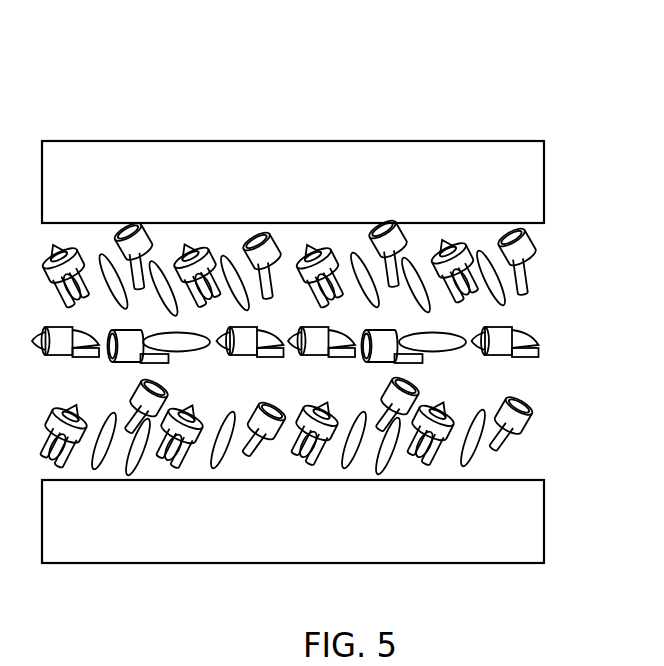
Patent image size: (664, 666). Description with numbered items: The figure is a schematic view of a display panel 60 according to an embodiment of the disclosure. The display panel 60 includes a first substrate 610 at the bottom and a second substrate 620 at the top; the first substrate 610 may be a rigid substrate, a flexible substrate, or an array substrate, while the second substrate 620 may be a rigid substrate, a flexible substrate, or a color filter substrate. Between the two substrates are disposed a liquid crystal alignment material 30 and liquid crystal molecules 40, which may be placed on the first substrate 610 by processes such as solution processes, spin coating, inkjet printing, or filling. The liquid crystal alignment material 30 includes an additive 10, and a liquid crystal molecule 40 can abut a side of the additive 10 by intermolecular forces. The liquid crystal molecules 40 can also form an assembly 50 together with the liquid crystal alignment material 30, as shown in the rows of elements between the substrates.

The display panel 60 is at (293, 80).
The second substrate 620 is at (520, 173).
The first substrate 610 is at (522, 528).
The liquid crystal alignment material 30 is at (520, 252).
The additive 10 is at (520, 282).
The liquid crystal molecule 40 is at (508, 295).
The assembly 50 is at (537, 350).